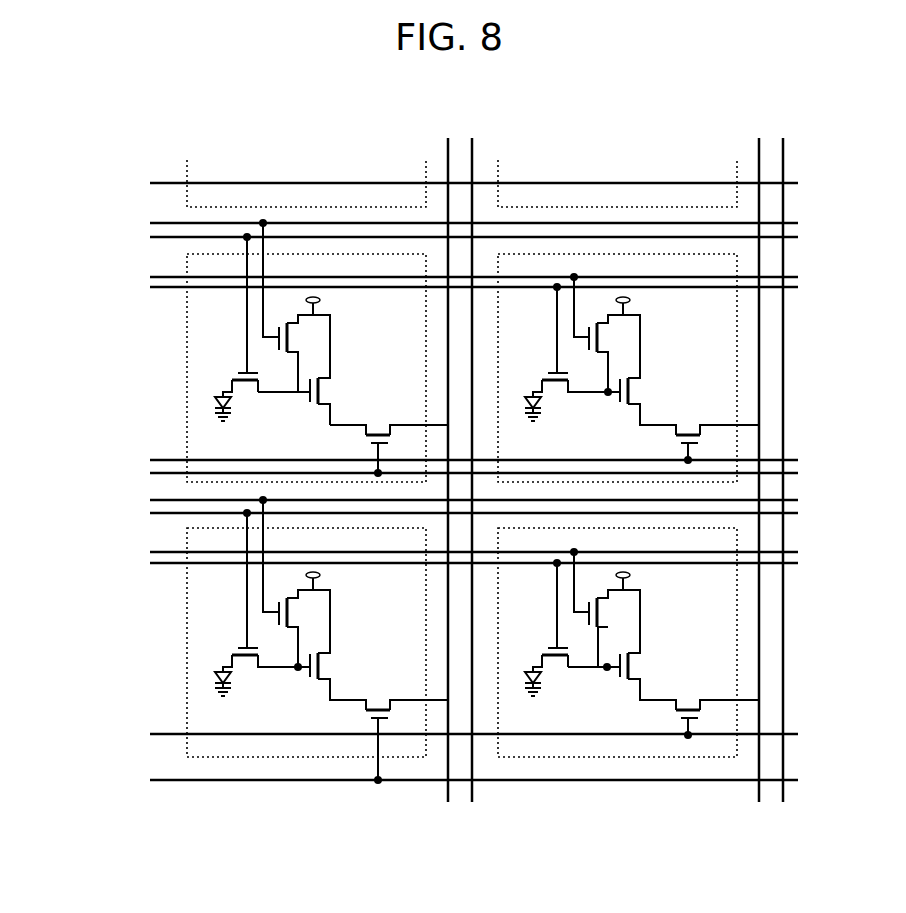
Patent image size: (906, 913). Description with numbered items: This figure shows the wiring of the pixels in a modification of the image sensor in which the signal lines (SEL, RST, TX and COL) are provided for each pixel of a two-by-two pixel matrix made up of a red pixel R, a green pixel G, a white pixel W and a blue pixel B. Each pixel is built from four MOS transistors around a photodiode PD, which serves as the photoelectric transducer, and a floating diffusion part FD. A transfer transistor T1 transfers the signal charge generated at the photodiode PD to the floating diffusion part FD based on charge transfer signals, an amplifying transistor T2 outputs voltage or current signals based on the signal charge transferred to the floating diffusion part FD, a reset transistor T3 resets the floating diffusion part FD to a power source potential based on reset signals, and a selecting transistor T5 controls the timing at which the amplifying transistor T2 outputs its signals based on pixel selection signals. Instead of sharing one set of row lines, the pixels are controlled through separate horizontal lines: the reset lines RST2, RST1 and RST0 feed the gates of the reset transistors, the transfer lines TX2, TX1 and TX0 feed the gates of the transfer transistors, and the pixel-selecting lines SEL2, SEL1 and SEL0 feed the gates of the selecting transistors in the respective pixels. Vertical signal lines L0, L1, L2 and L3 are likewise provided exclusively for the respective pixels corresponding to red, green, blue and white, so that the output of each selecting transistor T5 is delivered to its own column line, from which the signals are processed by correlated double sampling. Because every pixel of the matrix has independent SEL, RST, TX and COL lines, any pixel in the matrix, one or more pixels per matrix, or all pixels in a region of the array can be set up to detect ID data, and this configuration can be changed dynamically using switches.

The reset line RST2 is at (435, 211).
The transfer line TX2 is at (435, 238).
The reset line RST1 is at (435, 274).
The transfer line TX1 is at (435, 298).
The pixel-selecting line SEL1 is at (432, 442).
The pixel-selecting line SEL2 is at (432, 464).
The reset line RST0 is at (435, 553).
The transfer line TX0 is at (435, 578).
The pixel-selecting line SEL0 is at (437, 719).
The vertical signal line L0 is at (440, 518).
The vertical signal line L1 is at (473, 518).
The vertical signal line L2 is at (752, 518).
The vertical signal line L3 is at (781, 518).
The red pixel R is at (306, 368).
The green pixel G is at (617, 368).
The white pixel W is at (306, 642).
The blue pixel B is at (617, 642).
The transfer transistor T1 is at (247, 388).
The amplifying transistor T2 is at (321, 390).
The reset transistor T3 is at (292, 340).
The selecting transistor T5 is at (371, 438).
The photodiode PD is at (212, 403).
The floating diffusion part FD is at (268, 387).